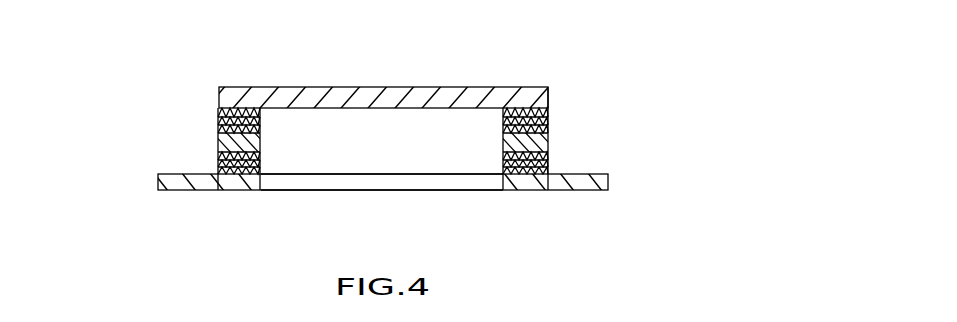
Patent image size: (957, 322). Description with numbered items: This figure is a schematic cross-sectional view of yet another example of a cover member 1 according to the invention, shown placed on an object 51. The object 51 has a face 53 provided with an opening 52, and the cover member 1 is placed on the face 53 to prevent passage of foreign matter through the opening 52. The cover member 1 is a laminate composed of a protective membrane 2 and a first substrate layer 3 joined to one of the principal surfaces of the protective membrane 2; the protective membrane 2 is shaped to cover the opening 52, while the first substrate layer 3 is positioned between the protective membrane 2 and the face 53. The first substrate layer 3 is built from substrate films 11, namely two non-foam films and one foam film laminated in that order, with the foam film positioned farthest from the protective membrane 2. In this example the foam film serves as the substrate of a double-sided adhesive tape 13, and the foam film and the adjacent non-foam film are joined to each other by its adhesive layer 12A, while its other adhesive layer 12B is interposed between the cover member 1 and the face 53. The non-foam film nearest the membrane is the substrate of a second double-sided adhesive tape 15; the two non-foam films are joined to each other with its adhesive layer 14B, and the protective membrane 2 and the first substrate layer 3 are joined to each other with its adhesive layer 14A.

The cover member 1 is at (549, 138).
The protective membrane 2 is at (375, 94).
The first substrate layer 3 is at (502, 109).
The substrate film 11 is at (295, 143).
The adhesive layer 12A is at (218, 152).
The adhesive layer 12B is at (218, 173).
The double-sided adhesive tape 13 is at (144, 154).
The adhesive layer 14A is at (218, 112).
The adhesive layer 14B is at (218, 128).
The double-sided adhesive tape 15 is at (144, 85).
The object 51 is at (607, 190).
The opening 52 is at (385, 180).
The face 53 is at (596, 174).